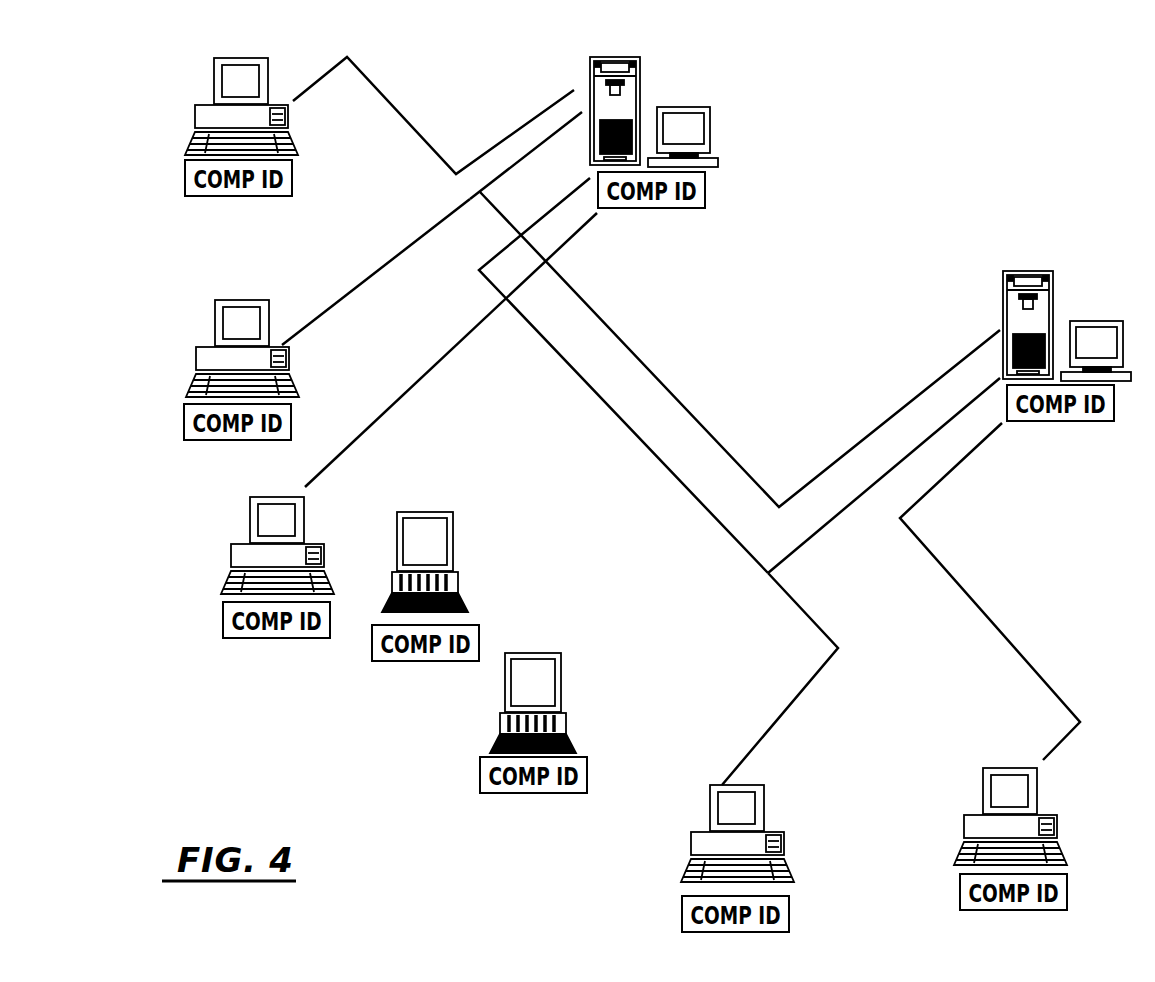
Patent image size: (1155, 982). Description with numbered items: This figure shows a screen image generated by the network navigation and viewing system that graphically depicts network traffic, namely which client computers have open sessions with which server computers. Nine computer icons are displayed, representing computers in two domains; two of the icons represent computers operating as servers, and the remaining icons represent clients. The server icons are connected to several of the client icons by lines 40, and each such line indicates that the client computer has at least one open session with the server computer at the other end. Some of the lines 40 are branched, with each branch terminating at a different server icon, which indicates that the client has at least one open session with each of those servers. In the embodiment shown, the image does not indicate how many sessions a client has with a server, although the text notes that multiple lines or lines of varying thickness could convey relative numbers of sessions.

The lines 40 is at (770, 642).